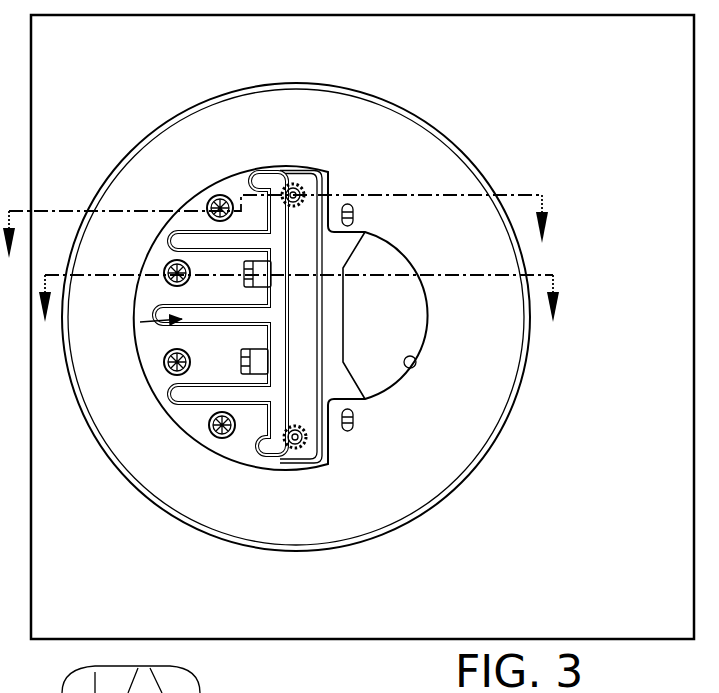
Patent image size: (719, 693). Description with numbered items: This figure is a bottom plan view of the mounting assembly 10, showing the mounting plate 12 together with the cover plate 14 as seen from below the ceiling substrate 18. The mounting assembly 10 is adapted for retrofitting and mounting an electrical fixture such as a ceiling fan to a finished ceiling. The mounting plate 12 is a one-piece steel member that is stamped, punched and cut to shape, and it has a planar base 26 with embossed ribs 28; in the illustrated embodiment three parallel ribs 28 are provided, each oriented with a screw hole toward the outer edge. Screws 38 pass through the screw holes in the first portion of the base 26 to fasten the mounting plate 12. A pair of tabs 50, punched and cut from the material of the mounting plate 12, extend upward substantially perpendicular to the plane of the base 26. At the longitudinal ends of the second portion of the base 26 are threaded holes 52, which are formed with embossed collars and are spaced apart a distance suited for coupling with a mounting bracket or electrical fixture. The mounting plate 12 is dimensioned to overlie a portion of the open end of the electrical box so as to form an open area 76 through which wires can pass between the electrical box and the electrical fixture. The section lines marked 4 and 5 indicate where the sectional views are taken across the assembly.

The mounting assembly 10 is at (520, 458).
The mounting plate 12 is at (140, 322).
The cover plate 14 is at (412, 490).
The ceiling substrate 18 is at (628, 577).
The planar base 26 is at (194, 218).
The embossed ribs 28 is at (166, 237).
The screws 38 is at (165, 366).
The tabs 50 is at (256, 345).
The threaded holes 52 is at (303, 190).
The open area 76 is at (414, 325).
The section line 4- 4 is at (296, 303).
The section line 5- 5 is at (289, 226).